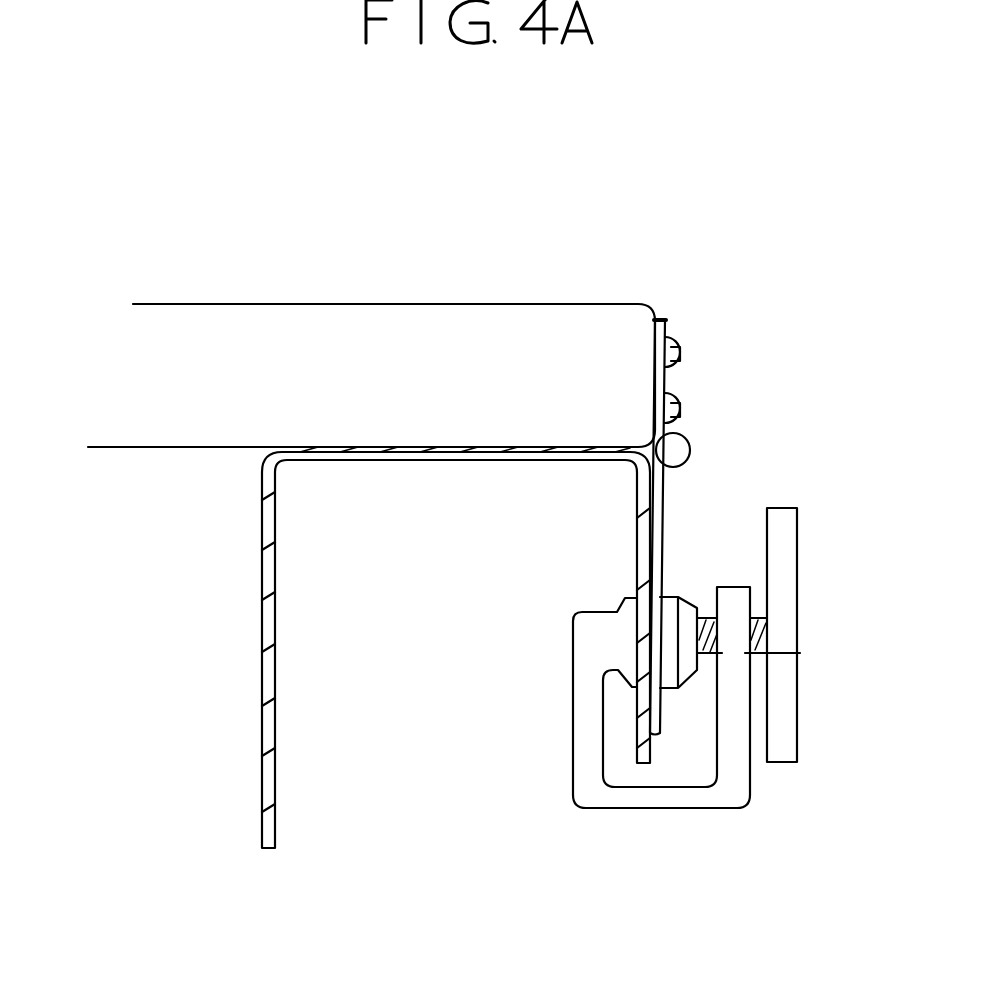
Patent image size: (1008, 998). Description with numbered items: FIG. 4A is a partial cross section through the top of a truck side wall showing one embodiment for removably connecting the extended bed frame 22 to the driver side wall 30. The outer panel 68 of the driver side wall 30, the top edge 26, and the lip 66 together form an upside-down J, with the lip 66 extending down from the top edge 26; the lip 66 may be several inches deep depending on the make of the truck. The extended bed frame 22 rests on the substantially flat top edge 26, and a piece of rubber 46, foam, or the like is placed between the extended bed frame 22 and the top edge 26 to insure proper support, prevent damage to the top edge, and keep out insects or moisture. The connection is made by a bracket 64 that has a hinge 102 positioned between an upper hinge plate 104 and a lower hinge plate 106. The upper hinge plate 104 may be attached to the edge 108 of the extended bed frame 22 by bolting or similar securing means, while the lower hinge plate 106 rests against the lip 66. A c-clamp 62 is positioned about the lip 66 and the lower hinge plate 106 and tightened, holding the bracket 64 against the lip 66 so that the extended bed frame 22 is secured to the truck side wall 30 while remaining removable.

The extended bed frame 22 is at (408, 390).
The top edge 26 is at (456, 650).
The driver side wall 30 is at (197, 689).
The piece of rubber 46 is at (398, 452).
The c-clamp 62 is at (824, 504).
The bracket 64 is at (757, 355).
The lip 66 is at (640, 546).
The outer panel 68 is at (275, 737).
The hinge 102 is at (690, 447).
The upper hinge plate 104 is at (667, 318).
The lower hinge plate 106 is at (660, 514).
The edge 108 is at (640, 302).